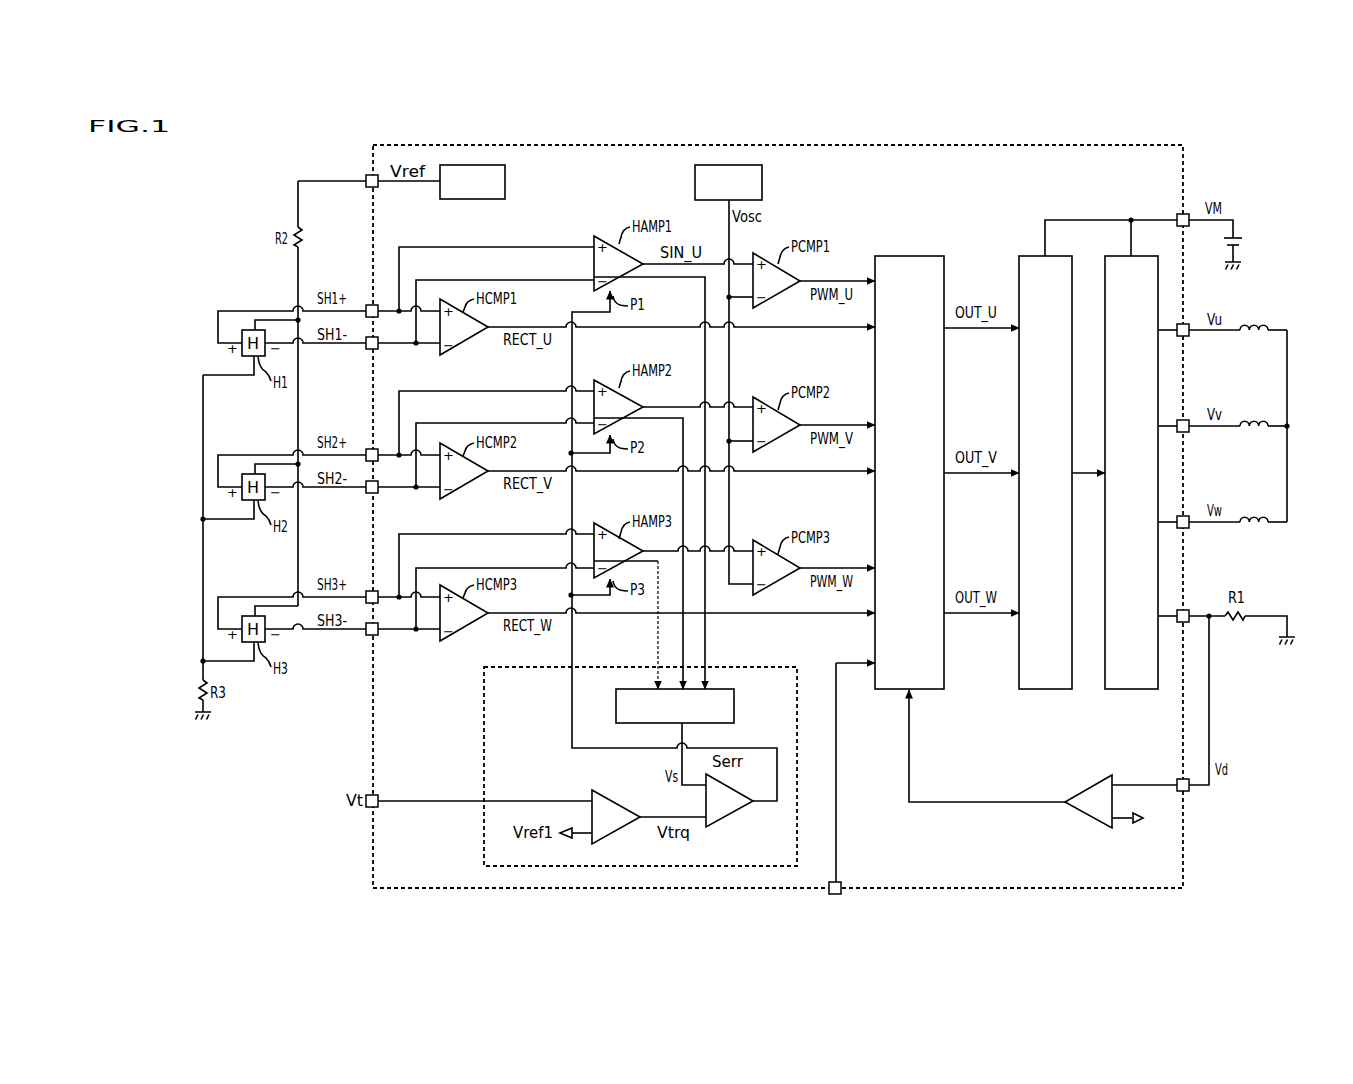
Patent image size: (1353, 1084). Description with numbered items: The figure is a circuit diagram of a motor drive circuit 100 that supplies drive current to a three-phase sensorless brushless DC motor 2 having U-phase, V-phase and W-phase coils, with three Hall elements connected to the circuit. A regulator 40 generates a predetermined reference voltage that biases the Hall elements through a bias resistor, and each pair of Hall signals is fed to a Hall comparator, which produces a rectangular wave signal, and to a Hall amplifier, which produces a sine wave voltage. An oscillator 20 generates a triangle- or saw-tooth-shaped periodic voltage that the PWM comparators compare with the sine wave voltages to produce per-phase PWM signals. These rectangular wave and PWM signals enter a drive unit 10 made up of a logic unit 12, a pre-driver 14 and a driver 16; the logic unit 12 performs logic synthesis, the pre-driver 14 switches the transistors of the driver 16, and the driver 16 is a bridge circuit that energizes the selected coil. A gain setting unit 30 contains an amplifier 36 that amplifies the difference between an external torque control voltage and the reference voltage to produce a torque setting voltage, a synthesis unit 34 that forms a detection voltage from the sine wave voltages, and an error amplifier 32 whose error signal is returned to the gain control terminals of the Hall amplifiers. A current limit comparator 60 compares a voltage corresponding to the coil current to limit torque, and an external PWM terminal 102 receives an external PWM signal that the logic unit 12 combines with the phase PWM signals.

The motor 2 is at (1297, 317).
The drive unit 10 is at (1158, 730).
The logic unit 12 is at (927, 690).
The pre-driver 14 is at (1046, 690).
The driver 16 is at (1131, 690).
The oscillator 20 is at (763, 181).
The gain setting unit 30 is at (757, 667).
The error amplifier 32 is at (731, 815).
The synthesis unit 34 is at (735, 708).
The amplifier 36 is at (617, 832).
The regulator 40 is at (506, 181).
The current limit comparator 60 is at (1090, 817).
The motor drive circuit 100 is at (1012, 890).
The external PWM terminal 102 is at (842, 882).